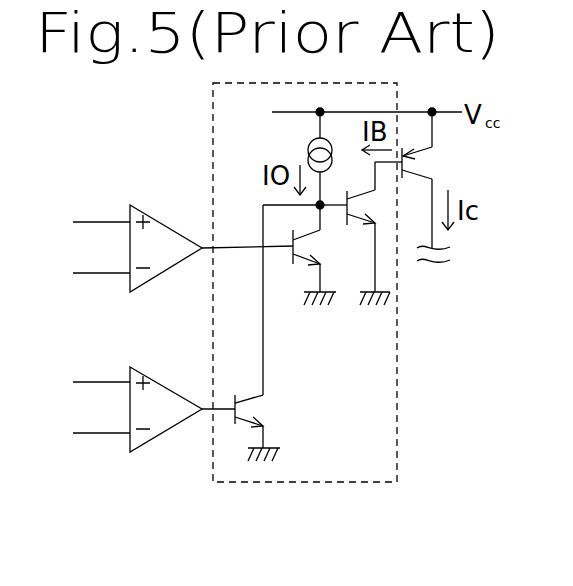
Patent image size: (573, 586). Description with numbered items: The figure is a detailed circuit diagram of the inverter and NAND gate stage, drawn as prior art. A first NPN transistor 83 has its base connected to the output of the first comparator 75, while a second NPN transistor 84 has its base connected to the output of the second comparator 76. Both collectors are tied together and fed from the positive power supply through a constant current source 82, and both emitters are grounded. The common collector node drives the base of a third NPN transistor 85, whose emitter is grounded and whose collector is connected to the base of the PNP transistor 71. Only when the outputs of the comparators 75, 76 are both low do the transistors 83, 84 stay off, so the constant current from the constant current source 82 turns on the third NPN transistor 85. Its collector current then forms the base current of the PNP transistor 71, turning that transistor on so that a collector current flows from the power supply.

The PNP transistor 71 is at (424, 153).
The first comparator 75 is at (163, 222).
The second comparator 76 is at (166, 386).
The constant current source 82 is at (310, 150).
The first NPN transistor 83 is at (302, 266).
The second NPN transistor 84 is at (250, 396).
The third NPN transistor 85 is at (355, 218).